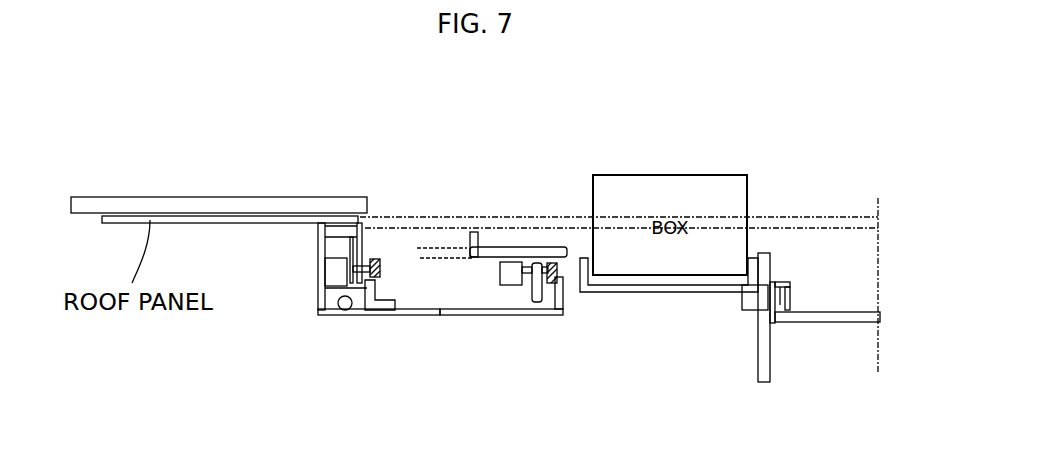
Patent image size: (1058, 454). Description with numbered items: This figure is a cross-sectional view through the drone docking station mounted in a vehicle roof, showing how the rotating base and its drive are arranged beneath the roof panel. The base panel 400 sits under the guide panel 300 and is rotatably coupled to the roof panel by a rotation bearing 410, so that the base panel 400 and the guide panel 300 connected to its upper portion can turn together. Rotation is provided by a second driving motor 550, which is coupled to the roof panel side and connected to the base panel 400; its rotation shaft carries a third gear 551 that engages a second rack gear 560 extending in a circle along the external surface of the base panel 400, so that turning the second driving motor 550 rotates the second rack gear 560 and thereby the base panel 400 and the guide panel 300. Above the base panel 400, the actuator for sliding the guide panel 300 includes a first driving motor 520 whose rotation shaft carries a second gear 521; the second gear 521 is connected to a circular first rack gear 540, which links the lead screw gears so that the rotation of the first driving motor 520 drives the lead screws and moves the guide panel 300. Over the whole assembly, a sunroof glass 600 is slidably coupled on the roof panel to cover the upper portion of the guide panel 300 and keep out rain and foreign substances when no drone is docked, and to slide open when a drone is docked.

The guide panel 300 is at (529, 284).
The base panel 400 is at (440, 350).
The rotation bearing 410 is at (328, 315).
The first driving motor 520 is at (513, 272).
The second gear 521 is at (555, 250).
The first rack gear 540 is at (555, 283).
The second driving motor 550 is at (318, 268).
The third gear 551 is at (385, 272).
The second rack gear 560 is at (400, 315).
The sunroof glass 600 is at (305, 206).